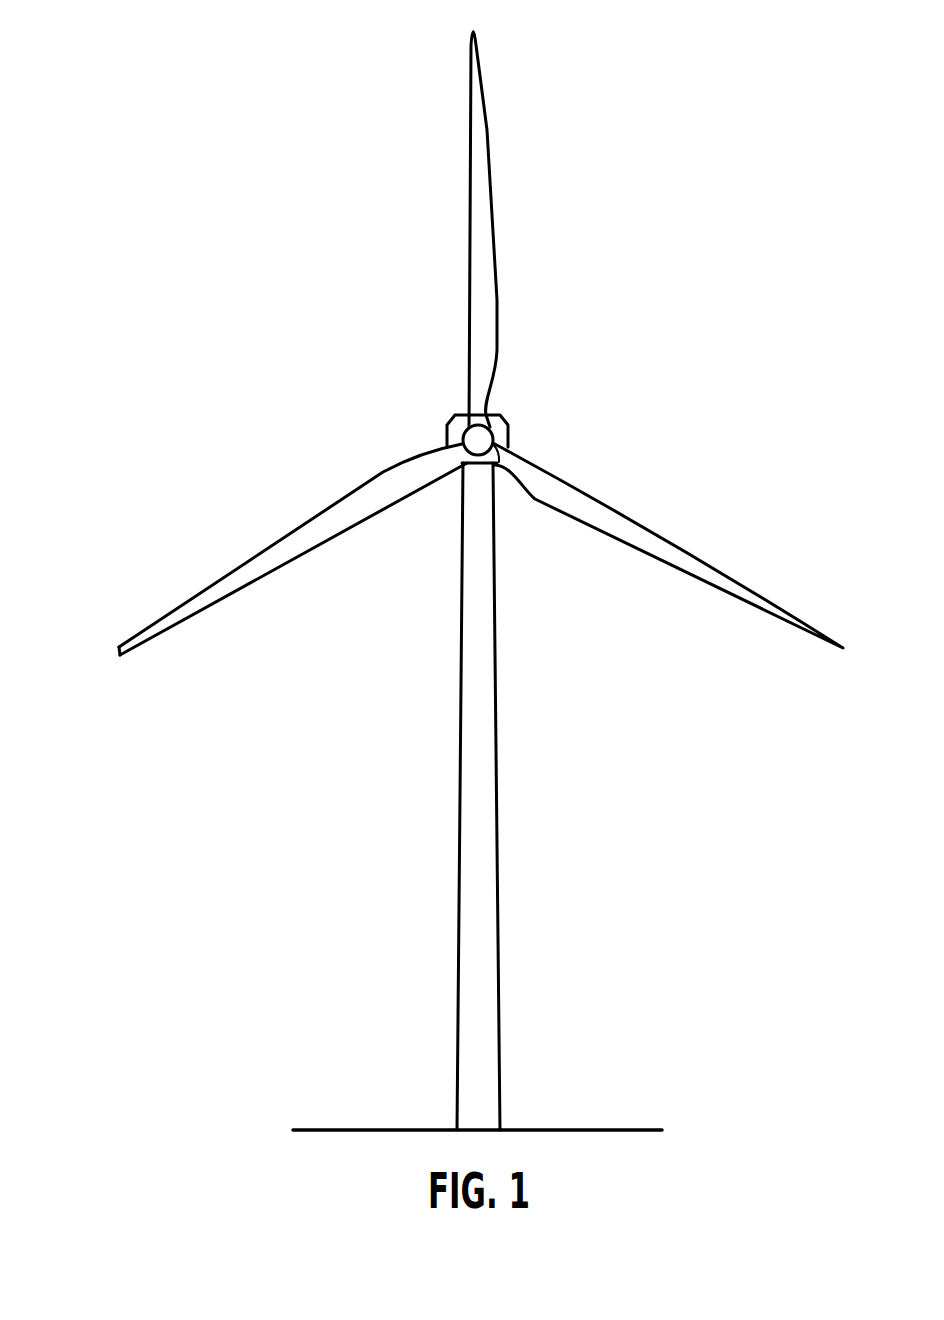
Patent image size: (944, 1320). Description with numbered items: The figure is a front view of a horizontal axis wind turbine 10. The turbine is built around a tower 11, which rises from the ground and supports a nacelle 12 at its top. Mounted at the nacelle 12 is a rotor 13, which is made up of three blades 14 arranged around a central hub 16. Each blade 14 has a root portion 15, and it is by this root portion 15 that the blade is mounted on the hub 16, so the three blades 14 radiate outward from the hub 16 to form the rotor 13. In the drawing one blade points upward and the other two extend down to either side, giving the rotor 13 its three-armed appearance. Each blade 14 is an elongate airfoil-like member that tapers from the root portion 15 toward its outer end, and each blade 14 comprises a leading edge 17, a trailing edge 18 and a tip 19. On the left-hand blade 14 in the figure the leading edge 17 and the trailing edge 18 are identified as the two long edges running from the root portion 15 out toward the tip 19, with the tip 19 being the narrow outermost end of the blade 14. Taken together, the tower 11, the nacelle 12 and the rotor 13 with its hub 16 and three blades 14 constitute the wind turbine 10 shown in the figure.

The horizontal axis wind turbine 10 is at (203, 876).
The tower 11 is at (491, 918).
The nacelle 12 is at (505, 420).
The rotor 13 is at (572, 366).
The blade 14 is at (489, 243).
The root portion 15 is at (500, 452).
The hub 16 is at (477, 440).
The leading edge 17 is at (223, 598).
The trailing edge 18 is at (227, 575).
The tip 19 is at (117, 647).